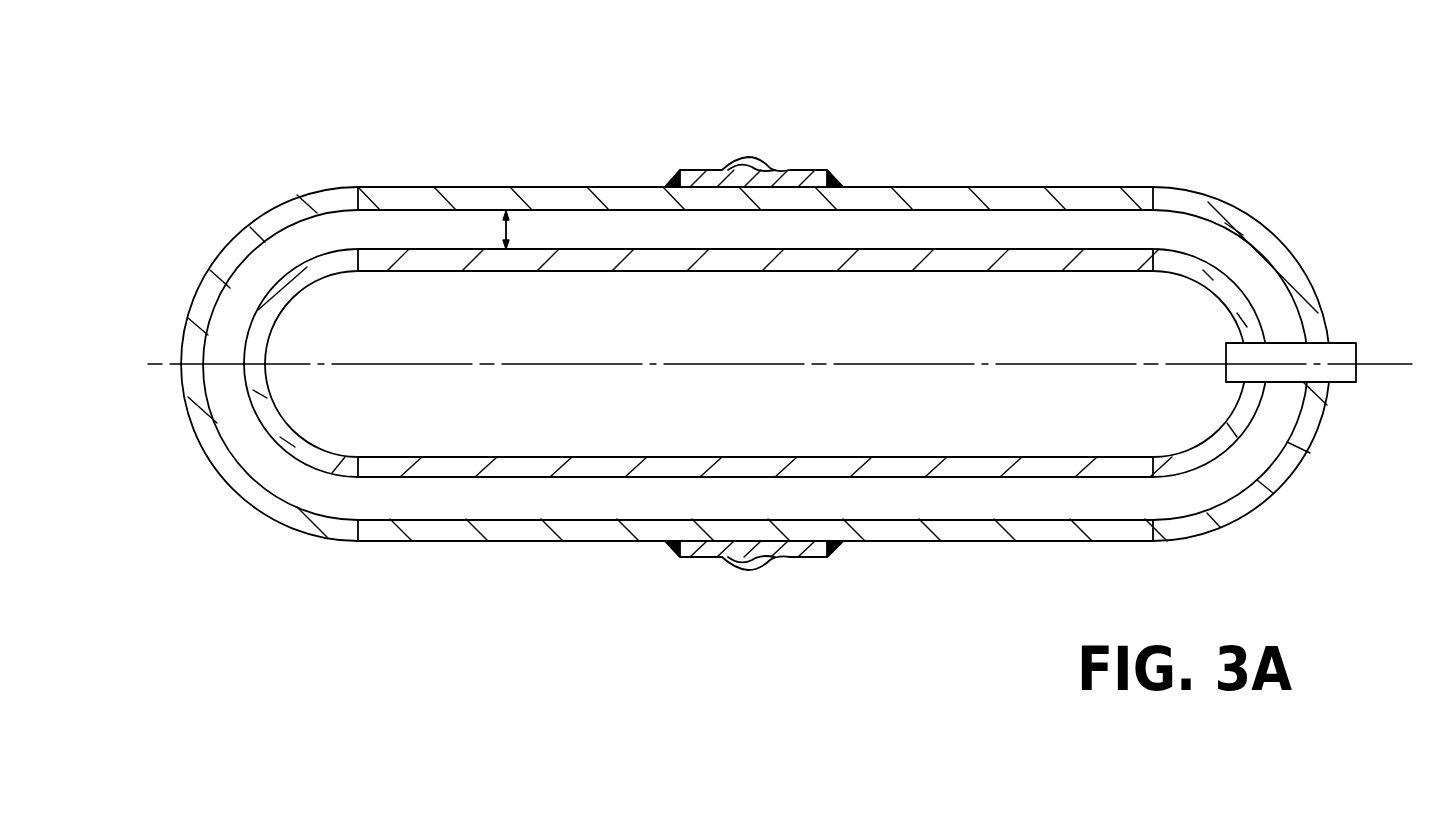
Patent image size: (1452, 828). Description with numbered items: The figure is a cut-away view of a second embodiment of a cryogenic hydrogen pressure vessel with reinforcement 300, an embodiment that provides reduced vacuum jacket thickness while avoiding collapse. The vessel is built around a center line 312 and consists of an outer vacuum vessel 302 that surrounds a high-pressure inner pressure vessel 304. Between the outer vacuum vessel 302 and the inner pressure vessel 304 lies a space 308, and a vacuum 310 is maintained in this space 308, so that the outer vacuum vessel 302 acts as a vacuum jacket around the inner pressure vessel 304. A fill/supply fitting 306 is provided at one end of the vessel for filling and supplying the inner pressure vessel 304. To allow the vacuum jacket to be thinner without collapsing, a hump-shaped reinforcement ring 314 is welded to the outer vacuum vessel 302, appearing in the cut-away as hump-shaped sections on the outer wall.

The cryogenic hydrogen pressure vessel with reinforcement 300 is at (1105, 103).
The outer vacuum vessel 302 is at (1095, 187).
The inner pressure vessel 304 is at (965, 252).
The fill/supply fitting 306 is at (1340, 342).
The space between outer vacuum vessel and inner pressure vessel 308 is at (505, 214).
The vacuum 310 is at (565, 232).
The center line 312 is at (1012, 362).
The hump-shaped reinforcement ring 314 is at (768, 172).